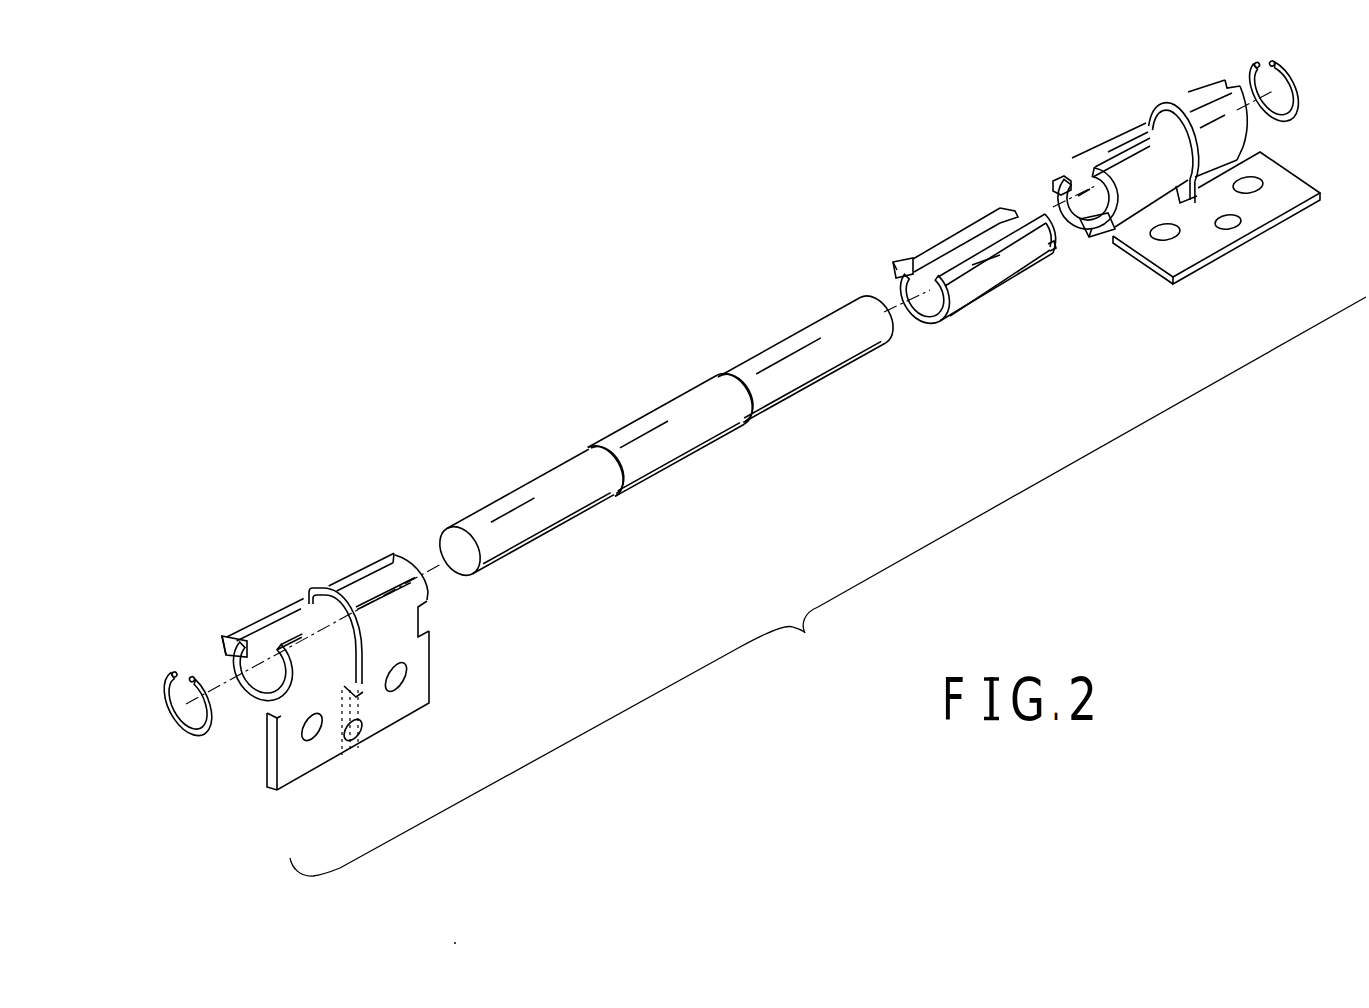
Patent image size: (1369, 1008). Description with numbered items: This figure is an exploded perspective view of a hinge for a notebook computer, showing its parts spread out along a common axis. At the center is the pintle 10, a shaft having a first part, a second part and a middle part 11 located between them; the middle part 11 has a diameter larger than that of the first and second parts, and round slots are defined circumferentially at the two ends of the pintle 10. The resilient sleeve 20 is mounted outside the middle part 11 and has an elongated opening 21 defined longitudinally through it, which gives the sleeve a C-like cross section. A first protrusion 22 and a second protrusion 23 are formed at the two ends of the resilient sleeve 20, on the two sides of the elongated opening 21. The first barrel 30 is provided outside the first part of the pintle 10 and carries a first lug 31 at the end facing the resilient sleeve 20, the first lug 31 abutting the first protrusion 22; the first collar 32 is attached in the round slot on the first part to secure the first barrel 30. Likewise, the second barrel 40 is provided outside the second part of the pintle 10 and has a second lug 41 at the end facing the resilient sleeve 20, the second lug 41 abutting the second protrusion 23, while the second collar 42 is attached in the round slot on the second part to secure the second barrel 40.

The pintle 10 is at (683, 480).
The middle part 11 is at (658, 412).
The resilient sleeve 20 is at (1000, 303).
The elongated opening 21 is at (973, 246).
The first protrusion 22 is at (906, 264).
The second protrusion 23 is at (1051, 255).
The first barrel 30 is at (378, 752).
The first lug 31 is at (427, 596).
The first collar 32 is at (183, 726).
The second barrel 40 is at (1272, 249).
The second lug 41 is at (1090, 246).
The second collar 42 is at (1296, 114).